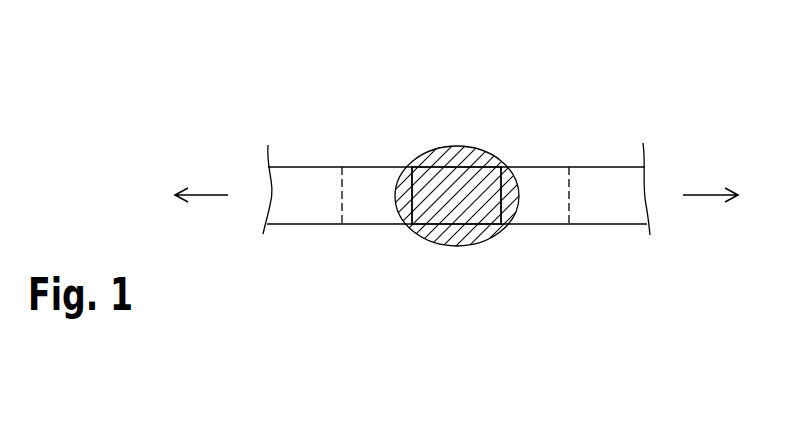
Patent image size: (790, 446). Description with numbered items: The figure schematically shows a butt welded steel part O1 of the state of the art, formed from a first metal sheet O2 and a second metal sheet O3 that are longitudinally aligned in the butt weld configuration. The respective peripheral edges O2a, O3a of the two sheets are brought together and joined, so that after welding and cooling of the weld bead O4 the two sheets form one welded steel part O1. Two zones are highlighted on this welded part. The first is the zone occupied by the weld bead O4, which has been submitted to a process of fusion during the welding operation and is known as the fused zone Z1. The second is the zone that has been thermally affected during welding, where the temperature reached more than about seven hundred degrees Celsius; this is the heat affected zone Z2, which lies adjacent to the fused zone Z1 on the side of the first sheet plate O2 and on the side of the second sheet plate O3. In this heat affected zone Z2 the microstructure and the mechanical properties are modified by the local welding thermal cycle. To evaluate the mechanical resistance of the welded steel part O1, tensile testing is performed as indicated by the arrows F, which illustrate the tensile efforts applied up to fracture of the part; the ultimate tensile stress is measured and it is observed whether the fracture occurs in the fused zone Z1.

The welded steel part O1 is at (483, 135).
The first metal sheet O2 is at (317, 156).
The second metal sheet O3 is at (604, 147).
The peripheral edge of the first metal sheet O2a is at (361, 228).
The peripheral edge of the second metal sheet O3a is at (565, 229).
The weld bead O4 is at (458, 175).
The fused zone Z1 is at (440, 247).
The heat affected zone Z2 is at (544, 192).
The tensile efforts F is at (206, 195).